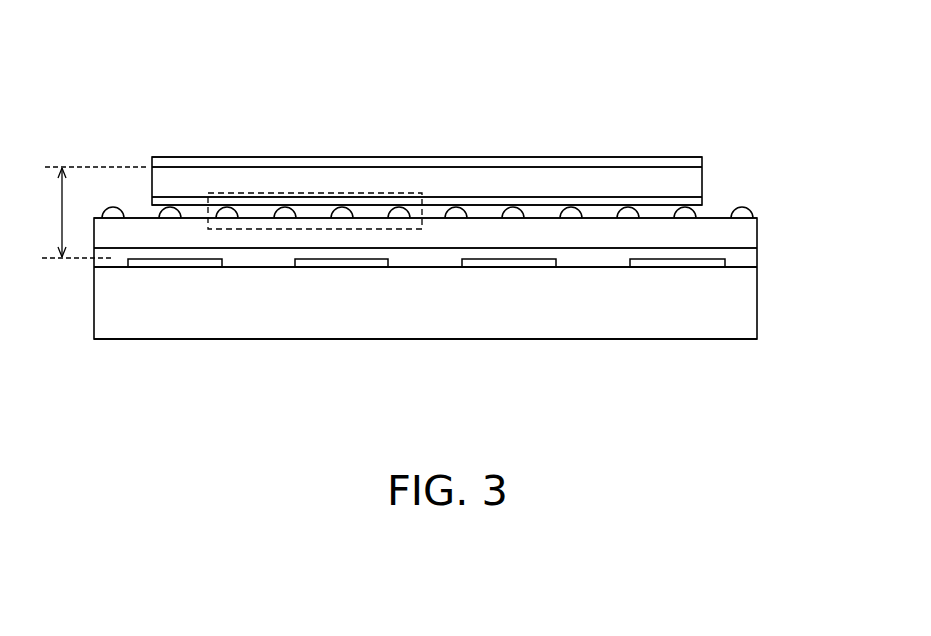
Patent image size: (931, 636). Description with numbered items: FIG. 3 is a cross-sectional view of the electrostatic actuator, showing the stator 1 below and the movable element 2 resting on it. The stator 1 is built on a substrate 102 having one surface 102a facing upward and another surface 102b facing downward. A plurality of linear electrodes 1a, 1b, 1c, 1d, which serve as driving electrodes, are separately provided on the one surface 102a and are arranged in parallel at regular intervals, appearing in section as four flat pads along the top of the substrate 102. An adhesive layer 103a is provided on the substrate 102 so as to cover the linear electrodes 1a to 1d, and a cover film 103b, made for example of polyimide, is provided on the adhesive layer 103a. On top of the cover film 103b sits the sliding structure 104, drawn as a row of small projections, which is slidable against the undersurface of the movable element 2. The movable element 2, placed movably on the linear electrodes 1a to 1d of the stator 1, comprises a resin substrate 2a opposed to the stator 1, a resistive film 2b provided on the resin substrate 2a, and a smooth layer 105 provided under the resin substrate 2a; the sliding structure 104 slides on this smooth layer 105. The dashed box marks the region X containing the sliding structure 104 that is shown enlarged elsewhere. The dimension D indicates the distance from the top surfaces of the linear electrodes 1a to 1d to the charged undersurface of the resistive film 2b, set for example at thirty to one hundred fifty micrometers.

The stator 1 is at (750, 370).
The linear electrode 1a is at (342, 264).
The linear electrode 1b is at (173, 266).
The linear electrode 1c is at (677, 265).
The linear electrode 1d is at (507, 265).
The movable element 2 is at (128, 120).
The resin substrate 2a is at (590, 180).
The resistive film 2b is at (528, 165).
The substrate 102 is at (745, 306).
The one surface 102a is at (437, 266).
The another surface 102b is at (428, 340).
The adhesive layer 103a is at (745, 259).
The cover film 103b is at (752, 233).
The sliding structure 104 is at (736, 198).
The smooth layer 105 is at (650, 205).
The region X is at (317, 193).
The distance D is at (93, 212).